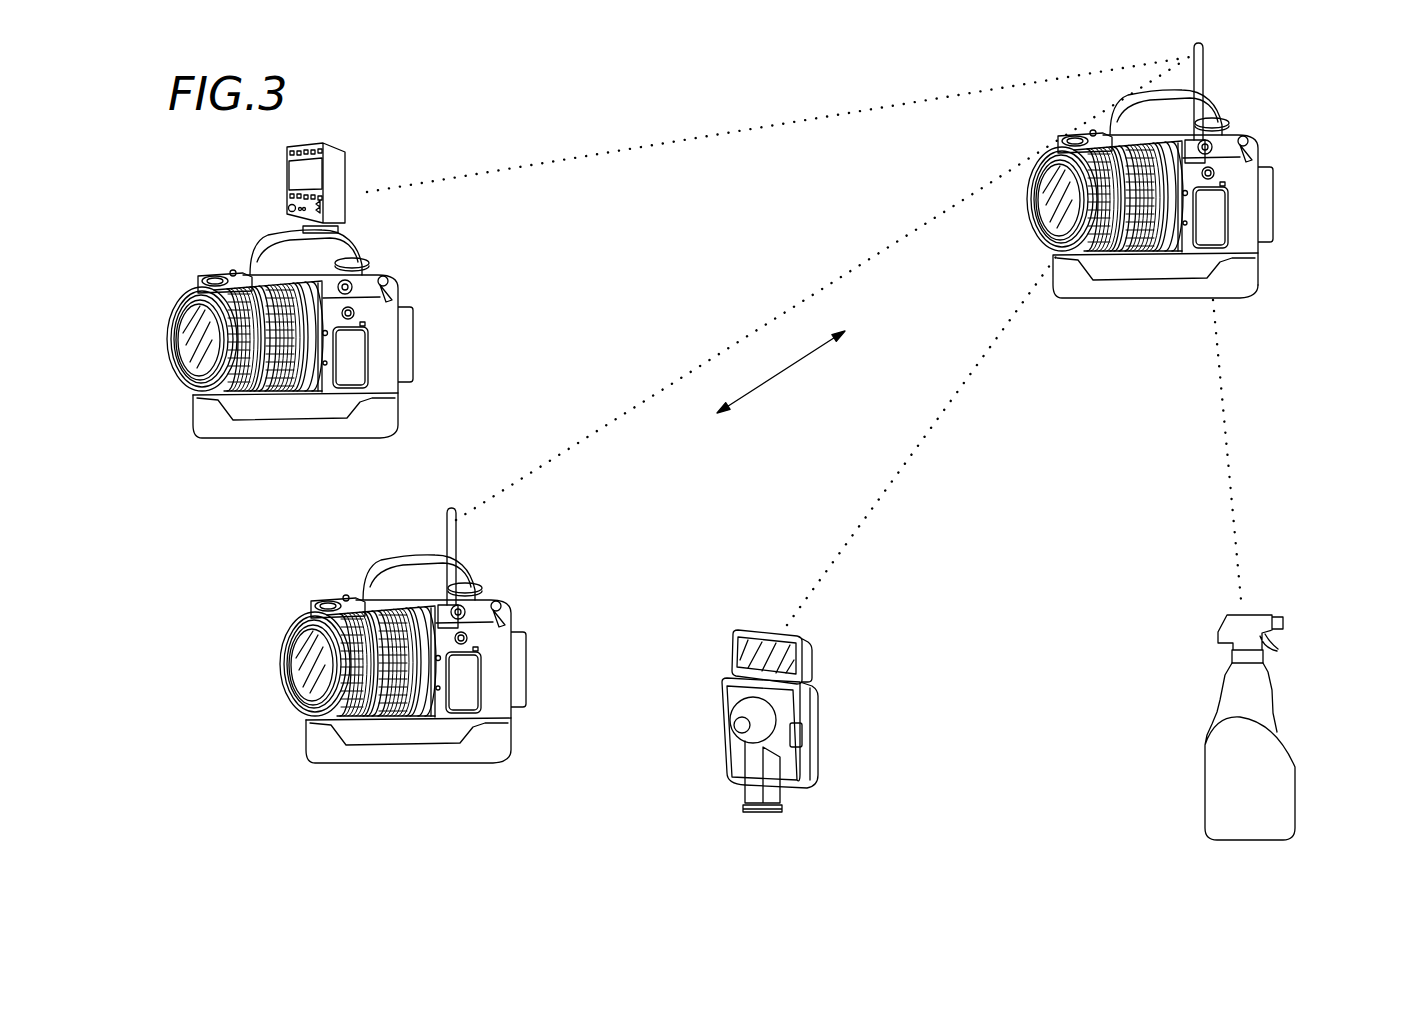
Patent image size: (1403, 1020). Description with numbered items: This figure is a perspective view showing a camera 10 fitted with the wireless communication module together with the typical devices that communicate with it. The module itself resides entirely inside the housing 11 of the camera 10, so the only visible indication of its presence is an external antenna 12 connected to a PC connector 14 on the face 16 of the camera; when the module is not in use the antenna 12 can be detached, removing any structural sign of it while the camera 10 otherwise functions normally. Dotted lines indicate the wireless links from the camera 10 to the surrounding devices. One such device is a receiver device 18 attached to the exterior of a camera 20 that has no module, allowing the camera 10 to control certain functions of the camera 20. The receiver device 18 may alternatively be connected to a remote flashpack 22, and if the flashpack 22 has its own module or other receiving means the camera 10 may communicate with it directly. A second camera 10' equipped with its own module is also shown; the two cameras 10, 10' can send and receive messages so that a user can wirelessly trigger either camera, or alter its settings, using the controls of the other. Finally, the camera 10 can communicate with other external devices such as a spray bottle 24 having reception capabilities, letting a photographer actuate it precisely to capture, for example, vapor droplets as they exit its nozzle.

The camera 10 is at (1202, 210).
The camera 10' is at (437, 635).
The housing 11 is at (1222, 171).
The external antenna 12 is at (1204, 48).
The PC connector 14 is at (1226, 140).
The face 16 is at (1148, 265).
The receiver device 18 is at (341, 139).
The camera 20 is at (406, 272).
The flashpack 22 is at (826, 656).
The spray bottle 24 is at (1290, 605).